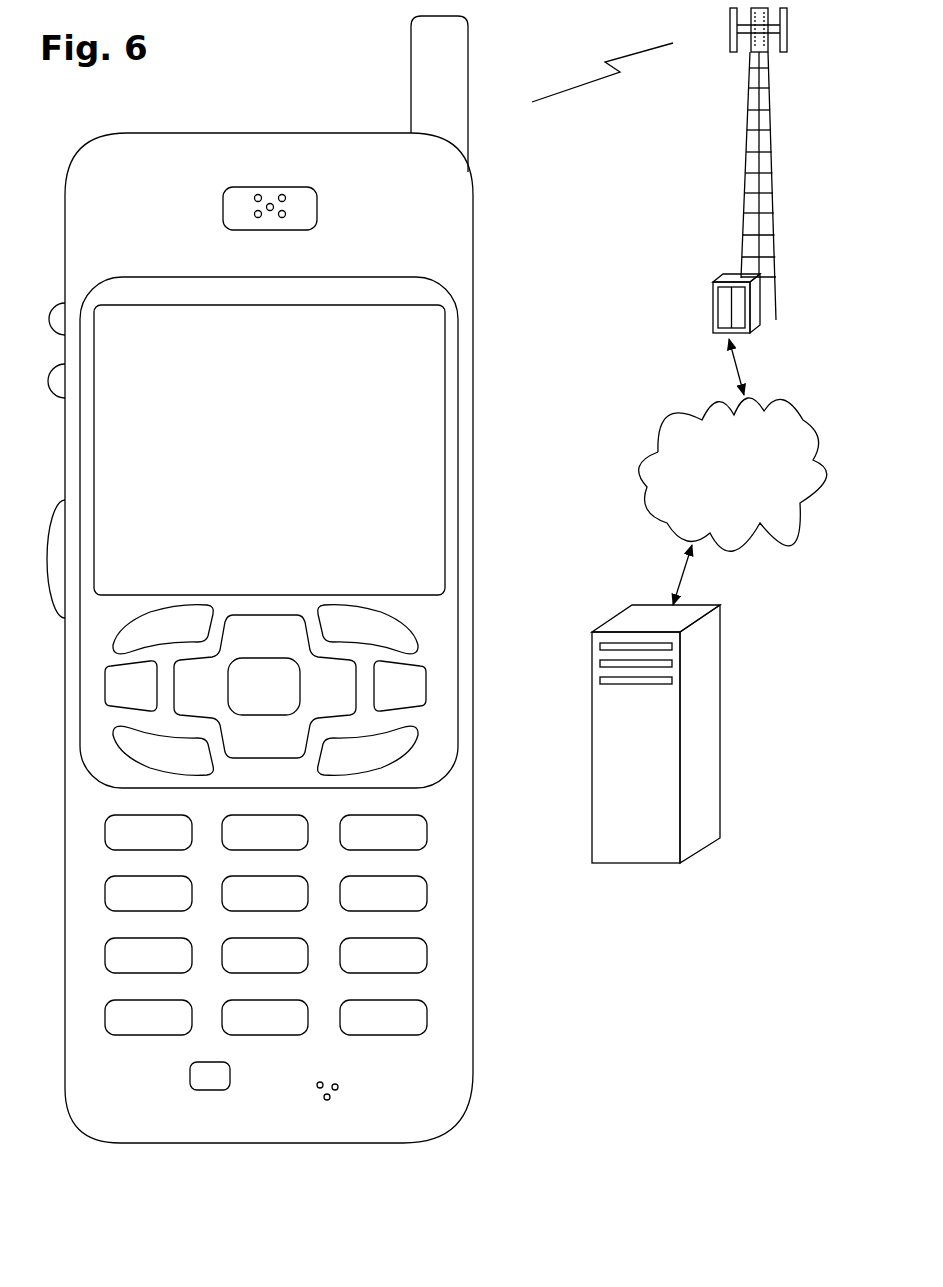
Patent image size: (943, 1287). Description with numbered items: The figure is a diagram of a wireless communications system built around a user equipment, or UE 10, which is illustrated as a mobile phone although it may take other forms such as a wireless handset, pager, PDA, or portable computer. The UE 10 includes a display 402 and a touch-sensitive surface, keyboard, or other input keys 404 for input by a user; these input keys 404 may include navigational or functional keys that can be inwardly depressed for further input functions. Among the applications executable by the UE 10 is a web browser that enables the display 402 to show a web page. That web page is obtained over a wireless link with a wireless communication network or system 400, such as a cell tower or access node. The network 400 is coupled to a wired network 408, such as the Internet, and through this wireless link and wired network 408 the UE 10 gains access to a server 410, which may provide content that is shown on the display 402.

The user equipment 10 is at (112, 1136).
The wireless communication network or system 400 is at (742, 183).
The display 402 is at (445, 316).
The input keys 404 is at (482, 606).
The wired network 408 is at (652, 520).
The server 410 is at (641, 862).